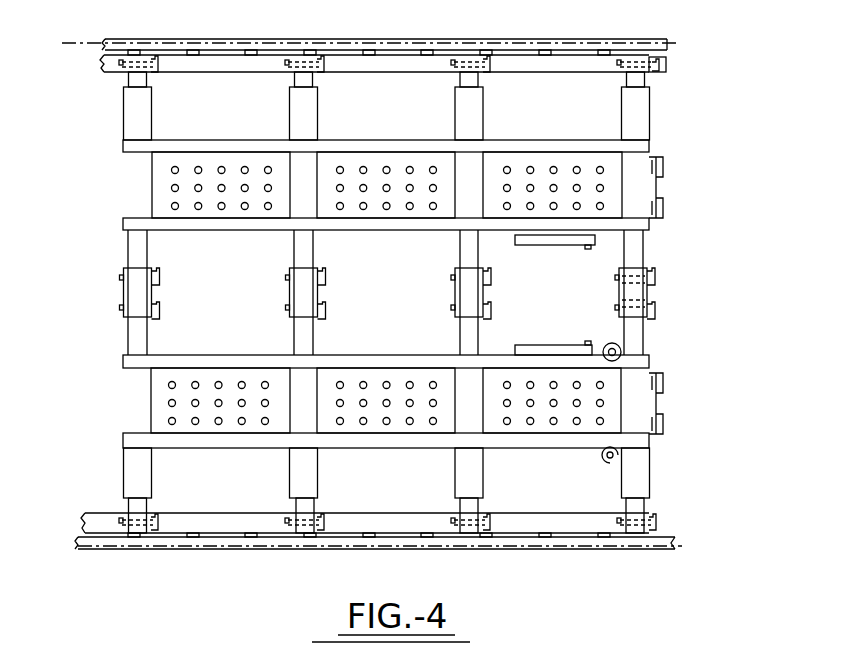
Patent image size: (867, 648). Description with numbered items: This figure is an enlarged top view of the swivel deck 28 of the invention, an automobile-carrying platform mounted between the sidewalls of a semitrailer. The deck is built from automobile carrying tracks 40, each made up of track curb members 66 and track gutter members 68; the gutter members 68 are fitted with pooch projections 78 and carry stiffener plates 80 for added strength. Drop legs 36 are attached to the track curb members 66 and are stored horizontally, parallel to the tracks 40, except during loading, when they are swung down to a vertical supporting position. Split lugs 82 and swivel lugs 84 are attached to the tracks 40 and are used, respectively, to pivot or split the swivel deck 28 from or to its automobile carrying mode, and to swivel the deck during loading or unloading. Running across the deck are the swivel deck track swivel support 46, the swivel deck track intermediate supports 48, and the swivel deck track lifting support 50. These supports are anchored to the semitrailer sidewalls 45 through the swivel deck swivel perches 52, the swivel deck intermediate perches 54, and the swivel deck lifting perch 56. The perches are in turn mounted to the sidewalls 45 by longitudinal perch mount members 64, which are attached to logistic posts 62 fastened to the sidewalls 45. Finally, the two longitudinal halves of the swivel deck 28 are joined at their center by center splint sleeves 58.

The swivel deck 28 is at (660, 147).
The drop legs 36 is at (553, 246).
The automobile carrying tracks 40 is at (138, 185).
The semitrailer sidewalls 45 is at (190, 45).
The swivel deck track swivel support 46 is at (120, 333).
The swivel deck track intermediate supports 48 is at (285, 253).
The swivel deck track lifting support 50 is at (655, 247).
The swivel deck swivel perches 52 is at (116, 509).
The swivel deck intermediate perches 54 is at (298, 48).
The swivel deck lifting perch 56 is at (662, 74).
The center splint sleeves 58 is at (646, 291).
The logistic posts 62 is at (368, 50).
The longitudinal perch mount members 64 is at (112, 66).
The track curb members 66 is at (365, 136).
The track gutter members 68 is at (262, 168).
The pooch projections 78 is at (198, 208).
The stiffener plates 80 is at (483, 168).
The split lugs 82 is at (618, 351).
The swivel lugs 84 is at (615, 457).